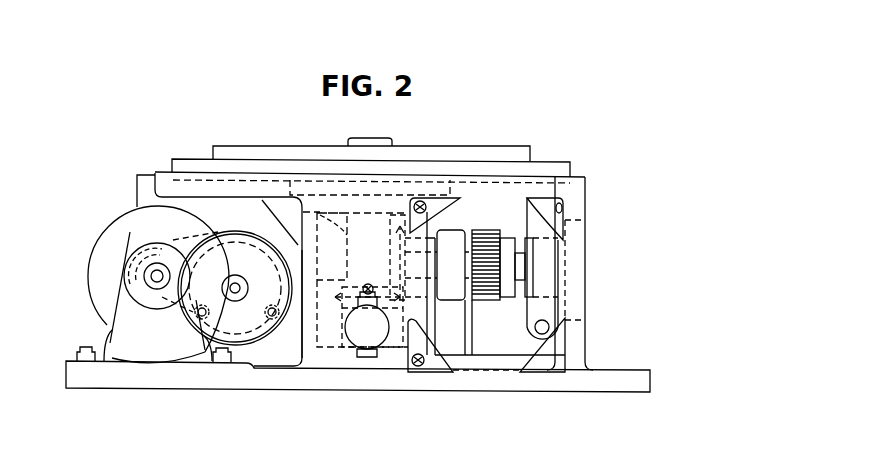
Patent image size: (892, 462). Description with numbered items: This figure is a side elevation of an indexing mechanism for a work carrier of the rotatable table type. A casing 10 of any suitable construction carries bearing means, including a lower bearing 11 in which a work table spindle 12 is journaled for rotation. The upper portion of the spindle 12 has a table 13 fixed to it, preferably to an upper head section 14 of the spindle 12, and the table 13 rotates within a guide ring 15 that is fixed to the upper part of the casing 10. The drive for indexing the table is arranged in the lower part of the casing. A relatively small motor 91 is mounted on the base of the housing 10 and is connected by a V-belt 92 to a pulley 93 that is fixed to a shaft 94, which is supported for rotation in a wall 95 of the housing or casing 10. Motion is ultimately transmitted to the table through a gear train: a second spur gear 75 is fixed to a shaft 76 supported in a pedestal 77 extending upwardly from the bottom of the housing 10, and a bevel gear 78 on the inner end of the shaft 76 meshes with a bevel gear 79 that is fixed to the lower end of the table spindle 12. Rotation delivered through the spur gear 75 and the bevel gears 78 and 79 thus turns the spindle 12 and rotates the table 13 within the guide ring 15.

The casing 10 is at (590, 204).
The lower bearing 11 is at (331, 368).
The work table spindle 12 is at (319, 212).
The table 13 is at (410, 150).
The upper head section 14 is at (450, 250).
The guide ring 15 is at (260, 167).
The second spur gear 75 is at (488, 230).
The shaft 76 is at (461, 216).
The pedestal 77 is at (472, 314).
The bevel gear 78 is at (391, 235).
The bevel gear 79 is at (346, 286).
The motor 91 is at (102, 246).
The V-belt 92 is at (206, 228).
The pulley 93 is at (246, 244).
The shaft 94 is at (243, 287).
The wall 95 is at (283, 353).